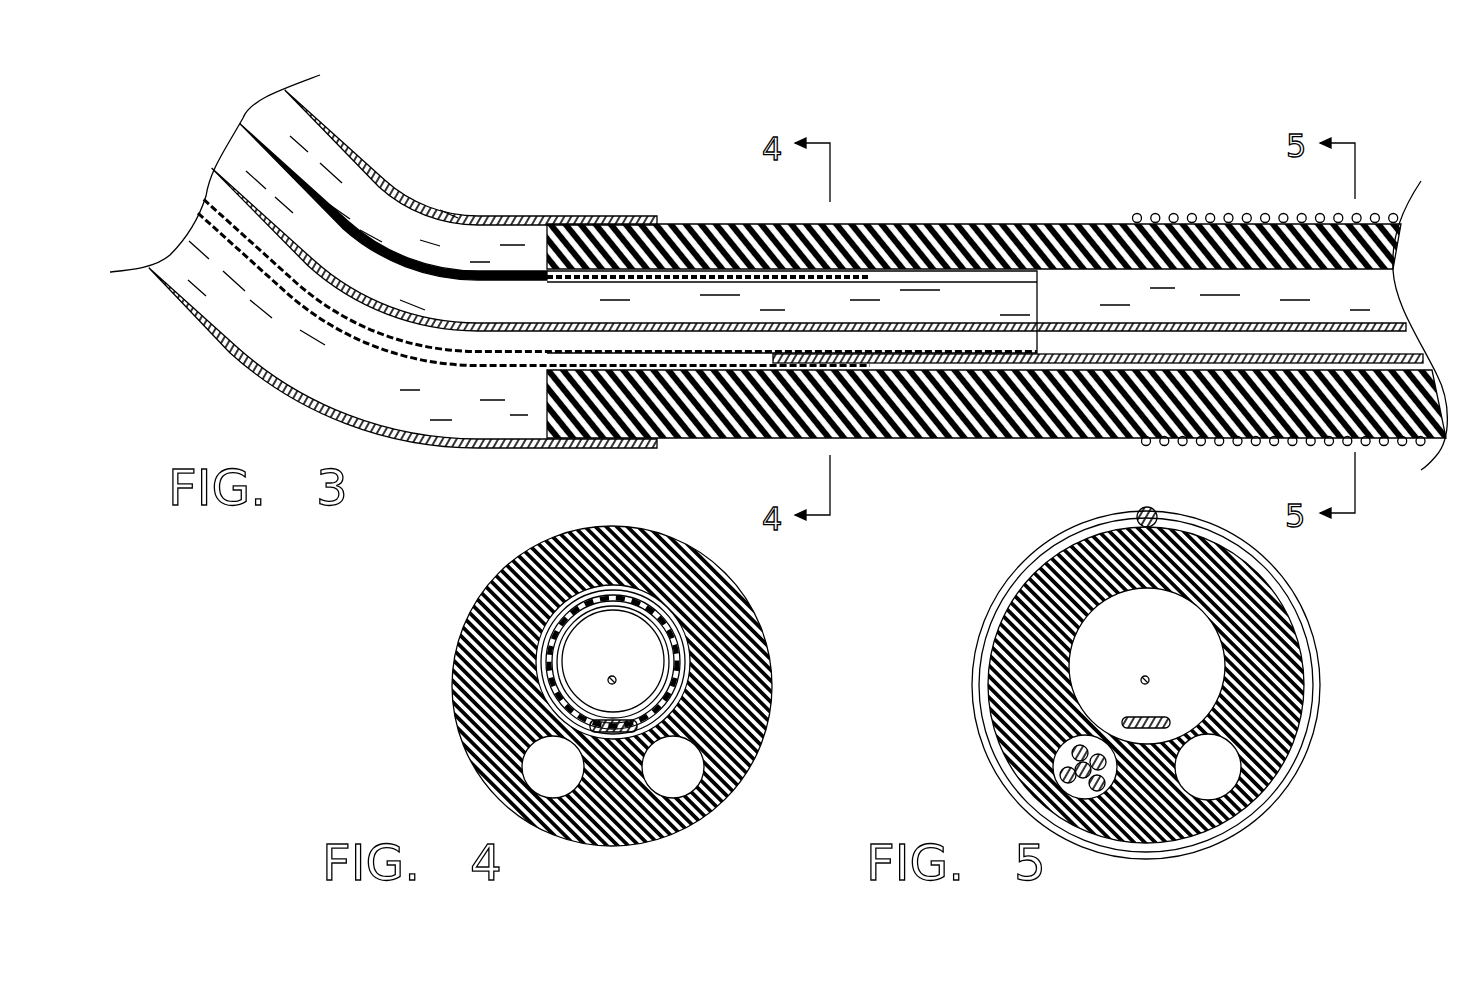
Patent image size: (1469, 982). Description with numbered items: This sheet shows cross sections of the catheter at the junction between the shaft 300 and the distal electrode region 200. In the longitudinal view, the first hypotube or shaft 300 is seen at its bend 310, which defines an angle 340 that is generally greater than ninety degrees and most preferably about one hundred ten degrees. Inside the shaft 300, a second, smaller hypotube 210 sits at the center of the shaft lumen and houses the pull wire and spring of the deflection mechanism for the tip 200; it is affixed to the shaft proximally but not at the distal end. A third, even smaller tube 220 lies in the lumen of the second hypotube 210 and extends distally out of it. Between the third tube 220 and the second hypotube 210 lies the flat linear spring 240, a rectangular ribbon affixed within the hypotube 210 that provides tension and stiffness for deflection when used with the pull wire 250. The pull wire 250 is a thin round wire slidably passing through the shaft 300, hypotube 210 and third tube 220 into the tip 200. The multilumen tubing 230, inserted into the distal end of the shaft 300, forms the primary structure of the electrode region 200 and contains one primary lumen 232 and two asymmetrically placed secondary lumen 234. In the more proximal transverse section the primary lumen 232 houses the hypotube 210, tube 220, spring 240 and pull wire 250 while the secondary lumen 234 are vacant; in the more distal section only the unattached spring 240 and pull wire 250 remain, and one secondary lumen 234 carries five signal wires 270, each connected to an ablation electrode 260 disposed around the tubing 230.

In FIG. 3, the distal electrode region 200 is at (1203, 143).
In FIG. 3, the second hypotube 210 is at (852, 277).
In FIG. 4, the second hypotube 210 is at (663, 630).
In FIG. 3, the third tube 220 is at (948, 280).
In FIG. 4, the third tube 220 is at (663, 690).
In FIG. 3, the multilumen tubing 230 is at (716, 236).
In FIG. 4, the multilumen tubing 230 is at (547, 558).
In FIG. 5, the multilumen tubing 230 is at (1035, 608).
In FIG. 3, the primary lumen 232 is at (1070, 288).
In FIG. 4, the primary lumen 232 is at (585, 657).
In FIG. 5, the primary lumen 232 is at (1107, 655).
In FIG. 4, the secondary lumen 234 is at (553, 767).
In FIG. 5, the secondary lumen 234 is at (1215, 770).
In FIG. 3, the linear spring 240 is at (1065, 363).
In FIG. 4, the linear spring 240 is at (590, 726).
In FIG. 5, the linear spring 240 is at (1167, 720).
In FIG. 3, the pull wire 250 is at (1100, 333).
In FIG. 4, the pull wire 250 is at (616, 678).
In FIG. 5, the pull wire 250 is at (1149, 677).
In FIG. 3, the ablation electrode 260 is at (1140, 206).
In FIG. 5, the ablation electrode 260 is at (1152, 509).
In FIG. 5, the signal wire 270 is at (1060, 757).
In FIG. 3, the shaft 300 is at (268, 384).
In FIG. 3, the bend 310 is at (512, 94).
In FIG. 3, the angle 340 is at (565, 205).